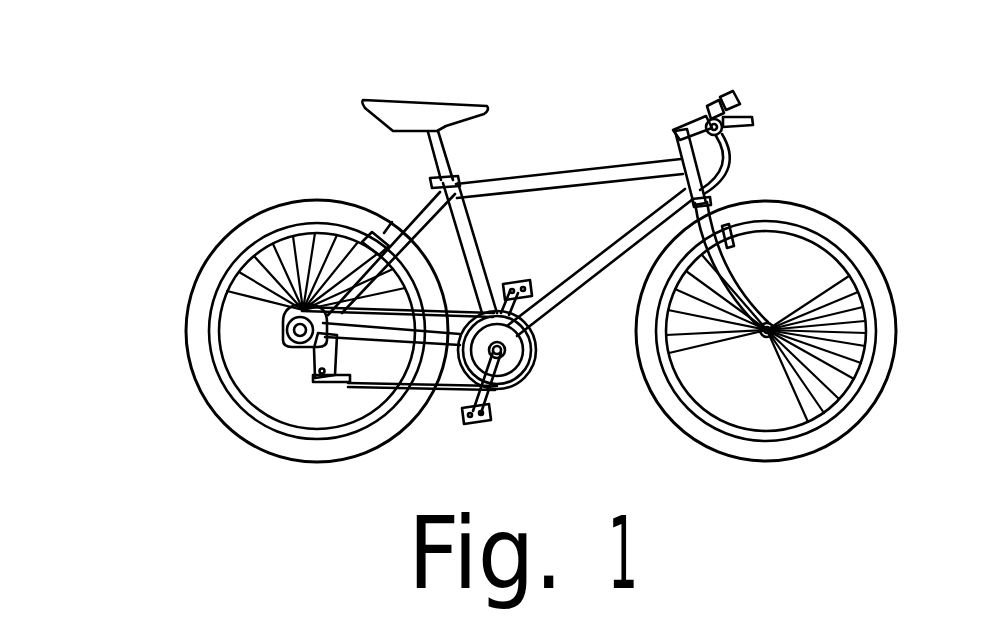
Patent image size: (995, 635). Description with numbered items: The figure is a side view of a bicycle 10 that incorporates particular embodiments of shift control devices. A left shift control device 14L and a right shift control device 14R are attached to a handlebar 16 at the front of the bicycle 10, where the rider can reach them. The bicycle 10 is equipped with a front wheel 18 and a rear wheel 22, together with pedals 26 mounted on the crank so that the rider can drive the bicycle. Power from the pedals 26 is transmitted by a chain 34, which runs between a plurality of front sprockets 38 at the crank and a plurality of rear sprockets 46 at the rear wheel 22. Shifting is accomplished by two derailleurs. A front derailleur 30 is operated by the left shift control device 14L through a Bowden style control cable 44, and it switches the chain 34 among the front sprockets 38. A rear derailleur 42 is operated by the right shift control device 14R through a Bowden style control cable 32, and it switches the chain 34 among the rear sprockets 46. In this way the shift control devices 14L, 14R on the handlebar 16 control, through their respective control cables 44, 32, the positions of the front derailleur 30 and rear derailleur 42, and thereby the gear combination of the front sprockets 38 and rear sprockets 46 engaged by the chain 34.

The bicycle 10 is at (529, 120).
The left shift control device 14L is at (654, 83).
The right shift control device 14R is at (643, 80).
The handlebar 16 is at (722, 129).
The front wheel 18 is at (868, 243).
The rear wheel 22 is at (237, 240).
The pedals 26 is at (491, 417).
The front derailleur 30 is at (496, 296).
The Bowden style control cable 32 is at (289, 331).
The chain 34 is at (367, 387).
The front sprockets 38 is at (537, 350).
The rear derailleur 42 is at (316, 374).
The Bowden style control cable 44 is at (587, 270).
The rear sprockets 46 is at (287, 318).